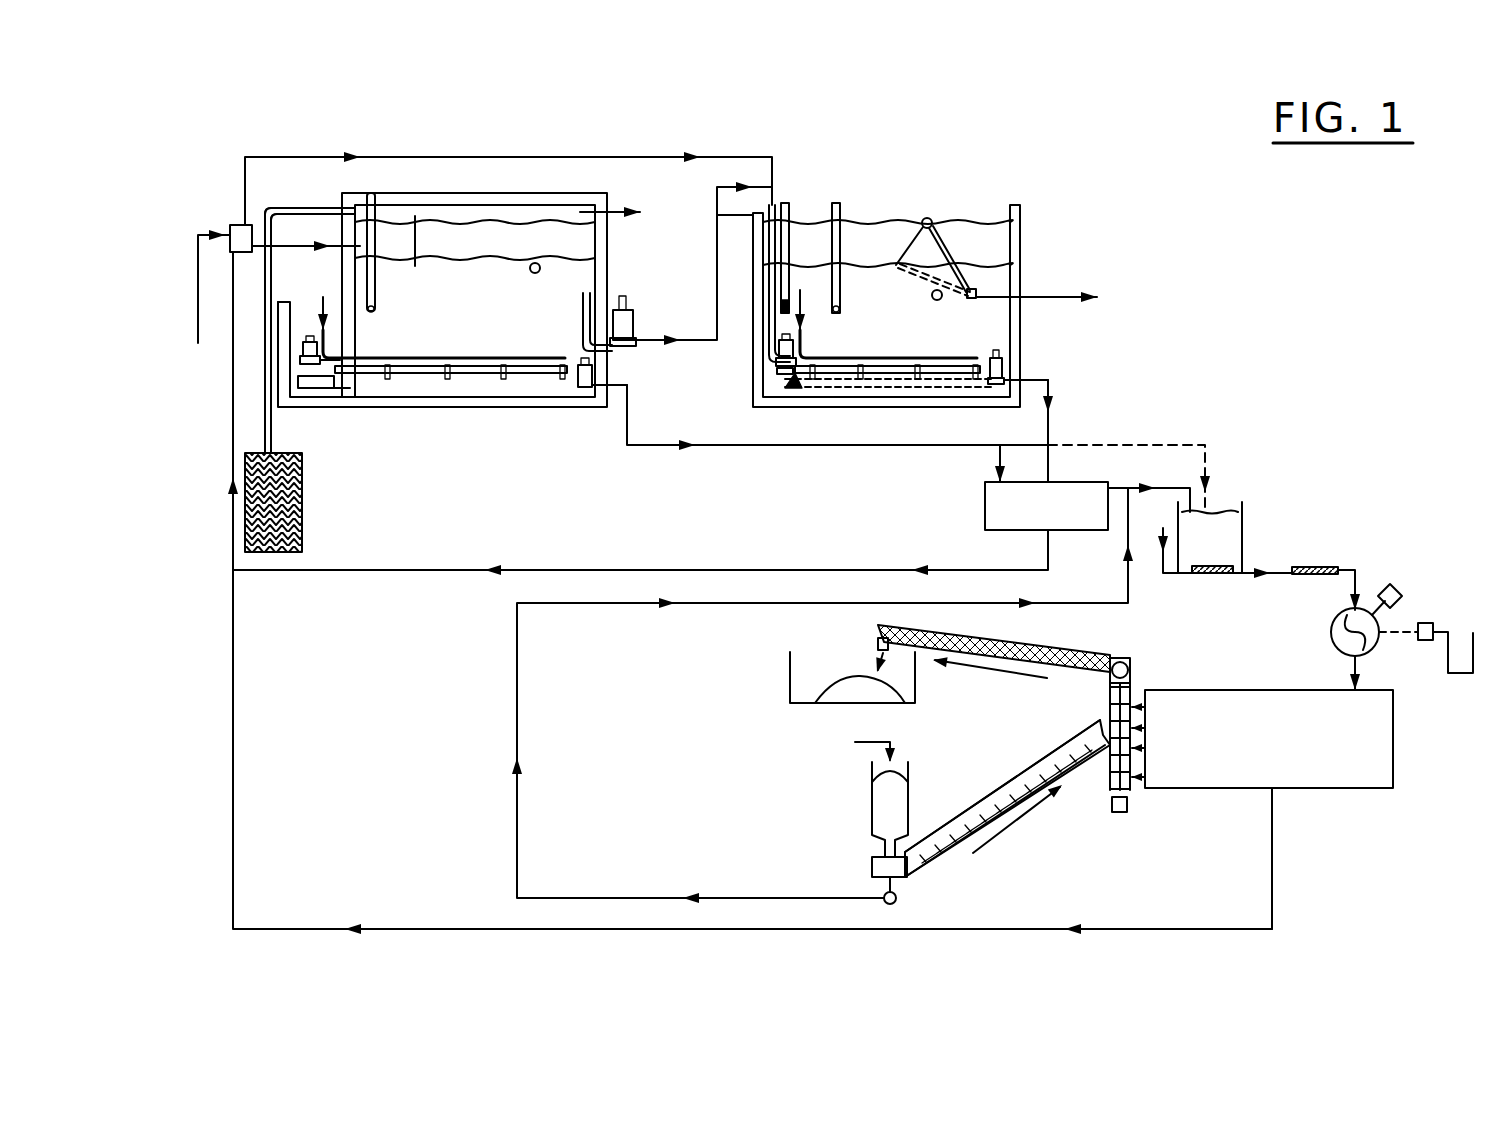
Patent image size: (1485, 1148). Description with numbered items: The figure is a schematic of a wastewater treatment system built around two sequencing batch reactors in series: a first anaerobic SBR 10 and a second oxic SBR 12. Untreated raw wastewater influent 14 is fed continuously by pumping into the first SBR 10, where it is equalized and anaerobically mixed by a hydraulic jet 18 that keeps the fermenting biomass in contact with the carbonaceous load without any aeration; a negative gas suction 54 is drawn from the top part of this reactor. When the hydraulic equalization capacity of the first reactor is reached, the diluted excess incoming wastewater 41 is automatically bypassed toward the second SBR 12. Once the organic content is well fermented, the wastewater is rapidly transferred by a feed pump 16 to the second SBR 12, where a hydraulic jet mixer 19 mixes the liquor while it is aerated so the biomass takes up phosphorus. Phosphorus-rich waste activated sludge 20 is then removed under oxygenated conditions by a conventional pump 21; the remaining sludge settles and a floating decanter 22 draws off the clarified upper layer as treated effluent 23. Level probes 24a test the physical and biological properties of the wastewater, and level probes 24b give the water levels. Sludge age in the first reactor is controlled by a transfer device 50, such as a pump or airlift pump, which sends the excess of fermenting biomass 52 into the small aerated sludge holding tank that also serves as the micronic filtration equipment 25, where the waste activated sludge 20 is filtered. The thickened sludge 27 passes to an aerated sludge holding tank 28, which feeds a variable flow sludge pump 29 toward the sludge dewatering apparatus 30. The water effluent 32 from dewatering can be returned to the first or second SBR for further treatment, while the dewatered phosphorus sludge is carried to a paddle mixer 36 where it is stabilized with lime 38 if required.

The first anaerobic SBR 10 is at (518, 341).
The second oxic SBR 12 is at (936, 319).
The untreated raw wastewater influent 14 is at (310, 238).
The feed pump 16 is at (627, 320).
The hydraulic jet 18 is at (367, 374).
The hydraulic jet mixer 19 is at (960, 367).
The waste activated sludge 20 is at (1048, 428).
The conventional pump 21 is at (1003, 355).
The floating decanter 22 is at (938, 223).
The treated effluent 23 is at (1048, 300).
The level probes 24a is at (797, 217).
The level probes 24b is at (842, 218).
The micronic filtration equipment 25 is at (1031, 524).
The thickened sludge 27 is at (1112, 488).
The aerated sludge holding tank 28 is at (1194, 554).
The variable flow sludge pump 29 is at (1316, 567).
The sludge dewatering apparatus 30 is at (1254, 753).
The water effluent 32 is at (1272, 870).
The paddle mixer 36 is at (1110, 690).
The lime 38 is at (882, 797).
The diluted excess incoming wastewater 41 is at (245, 185).
The transfer device 50 is at (580, 397).
The excess of fermenting biomass 52 is at (650, 447).
The negative gas suction 54 is at (608, 212).